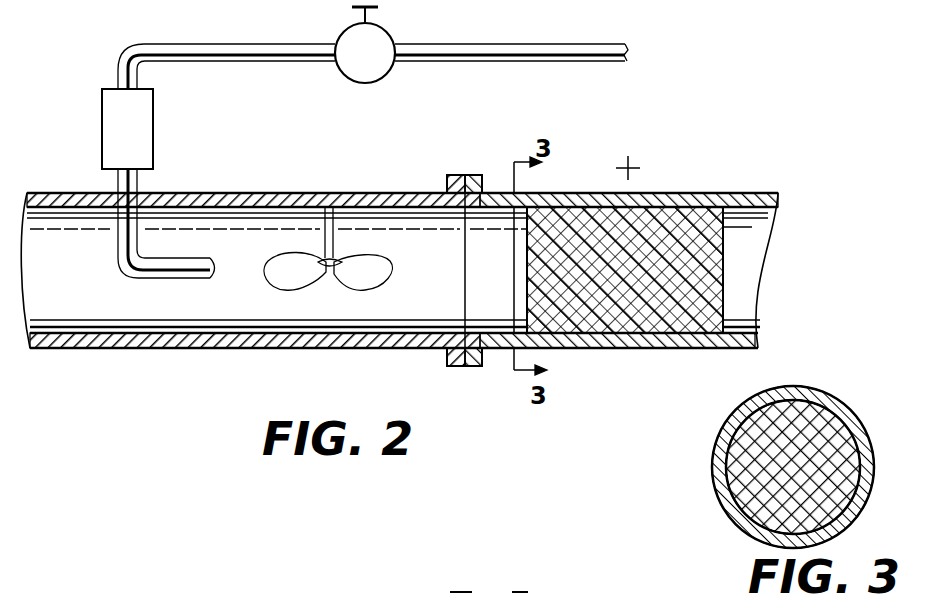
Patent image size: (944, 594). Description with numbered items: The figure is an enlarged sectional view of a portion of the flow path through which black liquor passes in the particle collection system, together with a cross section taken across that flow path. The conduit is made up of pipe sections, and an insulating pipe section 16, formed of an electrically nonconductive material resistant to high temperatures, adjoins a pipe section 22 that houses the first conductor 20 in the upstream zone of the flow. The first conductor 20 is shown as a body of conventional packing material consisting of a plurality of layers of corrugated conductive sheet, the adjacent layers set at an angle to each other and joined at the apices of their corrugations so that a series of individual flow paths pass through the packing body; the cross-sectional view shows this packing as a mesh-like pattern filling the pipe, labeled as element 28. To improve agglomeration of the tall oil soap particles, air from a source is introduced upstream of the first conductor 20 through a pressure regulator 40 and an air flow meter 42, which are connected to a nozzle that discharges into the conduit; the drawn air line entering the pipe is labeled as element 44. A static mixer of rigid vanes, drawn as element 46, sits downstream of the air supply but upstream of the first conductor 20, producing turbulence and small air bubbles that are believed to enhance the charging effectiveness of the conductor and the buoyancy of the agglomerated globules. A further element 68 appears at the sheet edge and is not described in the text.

In FIG. 2, the pipe section 16 is at (319, 349).
In FIG. 2, the first conductor 20 is at (724, 242).
In FIG. 2, the pipe section 22 is at (494, 366).
In FIG. 3, the mesh screen 28 is at (727, 497).
In FIG. 2, the pressure regulator 40 is at (392, 34).
In FIG. 2, the air flow meter 42 is at (102, 108).
In FIG. 2, the discharge pipe 44 is at (186, 279).
In FIG. 2, the fan 46 is at (352, 289).
In FIG. 2, the element 68 is at (496, 591).